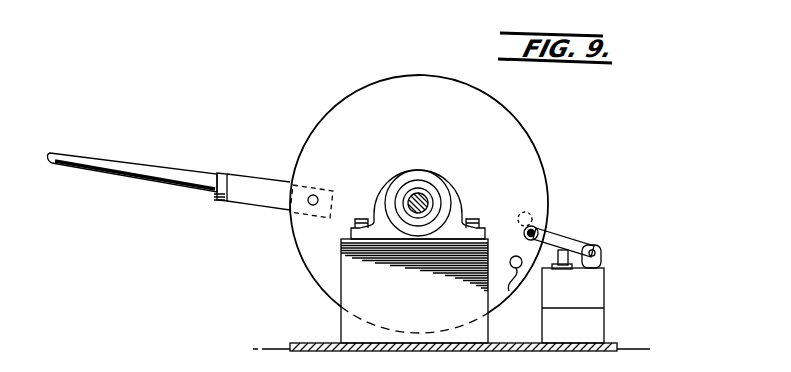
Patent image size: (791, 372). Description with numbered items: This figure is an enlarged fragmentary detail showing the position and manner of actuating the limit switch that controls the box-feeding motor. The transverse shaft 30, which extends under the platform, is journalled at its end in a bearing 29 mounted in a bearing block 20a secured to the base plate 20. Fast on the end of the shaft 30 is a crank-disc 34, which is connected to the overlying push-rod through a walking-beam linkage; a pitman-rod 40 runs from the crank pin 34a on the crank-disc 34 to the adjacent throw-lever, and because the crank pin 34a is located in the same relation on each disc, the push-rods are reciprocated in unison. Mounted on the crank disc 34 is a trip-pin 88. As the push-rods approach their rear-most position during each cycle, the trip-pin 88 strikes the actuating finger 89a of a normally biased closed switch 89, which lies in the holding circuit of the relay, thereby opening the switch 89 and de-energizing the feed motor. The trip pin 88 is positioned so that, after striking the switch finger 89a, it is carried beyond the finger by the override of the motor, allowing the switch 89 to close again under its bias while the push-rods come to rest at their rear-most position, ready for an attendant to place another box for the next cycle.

The base plate 20 is at (307, 342).
The bearing block 20a is at (346, 326).
The bearing 29 is at (456, 196).
The shaft 30 is at (421, 200).
The crank-disc 34 is at (530, 192).
The crank pin 34a is at (316, 195).
The pitman-rod 40 is at (173, 170).
The trip-pin 88 is at (560, 206).
The switch 89 is at (593, 283).
The actuating finger 89a is at (553, 243).